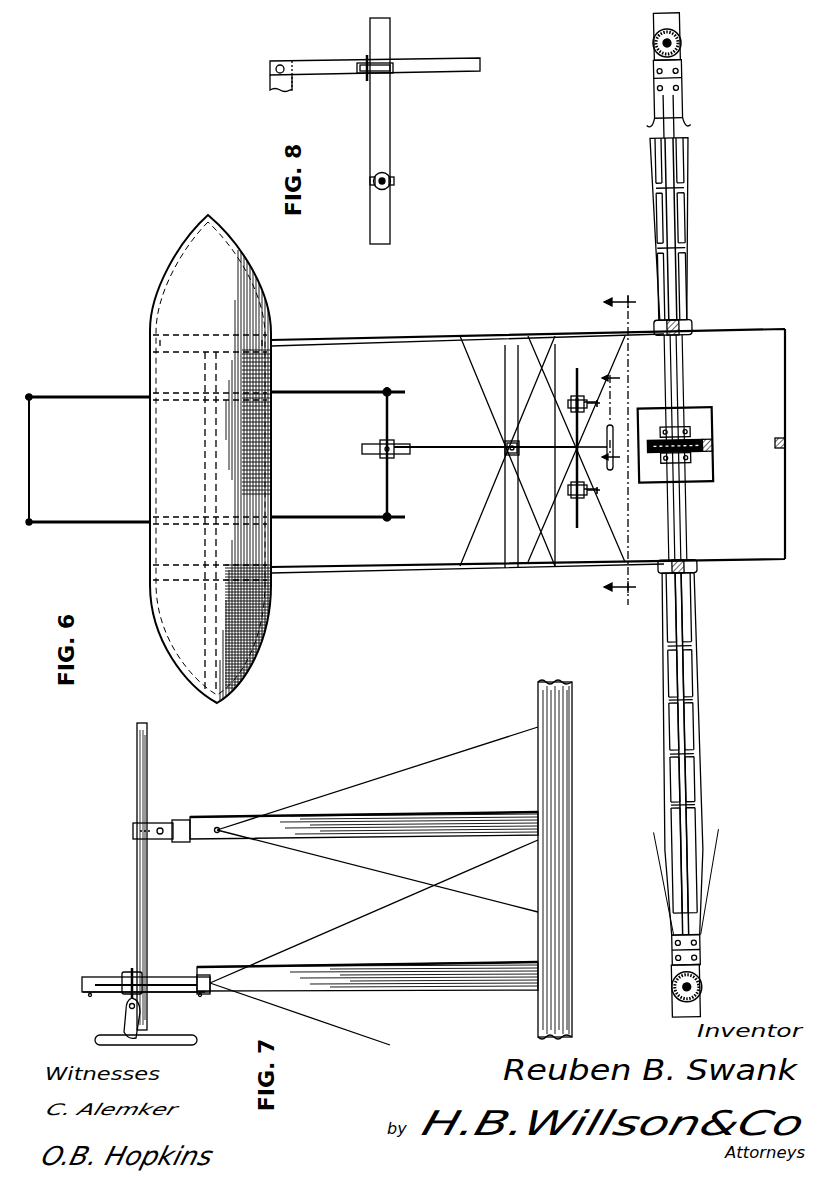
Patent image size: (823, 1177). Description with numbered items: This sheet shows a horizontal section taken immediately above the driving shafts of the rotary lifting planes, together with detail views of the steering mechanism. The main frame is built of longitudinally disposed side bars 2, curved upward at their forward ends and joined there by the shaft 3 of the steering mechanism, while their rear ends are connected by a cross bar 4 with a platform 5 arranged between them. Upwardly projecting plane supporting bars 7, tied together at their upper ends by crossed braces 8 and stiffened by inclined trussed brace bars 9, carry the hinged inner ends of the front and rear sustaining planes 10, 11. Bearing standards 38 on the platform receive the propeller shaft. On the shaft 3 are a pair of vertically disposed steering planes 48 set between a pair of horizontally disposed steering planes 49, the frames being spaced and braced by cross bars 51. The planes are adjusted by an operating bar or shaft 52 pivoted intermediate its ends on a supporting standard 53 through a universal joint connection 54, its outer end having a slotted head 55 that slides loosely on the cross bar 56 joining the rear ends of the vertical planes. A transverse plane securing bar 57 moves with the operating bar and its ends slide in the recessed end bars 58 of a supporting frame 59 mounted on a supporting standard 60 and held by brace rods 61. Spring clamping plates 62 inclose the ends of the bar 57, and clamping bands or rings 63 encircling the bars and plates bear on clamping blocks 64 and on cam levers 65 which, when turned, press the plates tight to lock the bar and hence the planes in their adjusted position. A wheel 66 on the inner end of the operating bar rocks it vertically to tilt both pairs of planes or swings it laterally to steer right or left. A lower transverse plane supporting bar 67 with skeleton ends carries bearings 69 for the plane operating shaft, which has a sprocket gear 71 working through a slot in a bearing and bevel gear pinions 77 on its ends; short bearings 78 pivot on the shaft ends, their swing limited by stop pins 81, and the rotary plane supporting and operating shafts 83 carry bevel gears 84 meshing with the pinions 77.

In FIG. 6, the side bars 2 is at (406, 340).
In FIG. 7, the side bars 2 is at (572, 852).
In FIG. 6, the shaft 3 is at (207, 480).
In FIG. 6, the cross bar 4 is at (508, 540).
In FIG. 6, the platform 5 is at (738, 444).
In FIG. 6, the plane supporting bars 7 is at (698, 326).
In FIG. 6, the crossed braces 8 is at (604, 414).
In FIG. 6, the trussed brace bars 9 is at (622, 444).
In FIG. 6, the front sustaining plane 10 is at (679, 138).
In FIG. 6, the rear sustaining plane 11 is at (718, 449).
In FIG. 6, the bearing standards 38 is at (780, 436).
In FIG. 6, the vertically disposed steering planes 48 is at (96, 396).
In FIG. 6, the horizontally disposed steering planes 49 is at (258, 600).
In FIG. 6, the cross bars 51 is at (192, 350).
In FIG. 6, the operating bar or shaft 52 is at (480, 446).
In FIG. 7, the operating bar or shaft 52 is at (138, 880).
In FIG. 8, the operating bar or shaft 52 is at (392, 180).
In FIG. 6, the supporting standard 53 is at (503, 446).
In FIG. 7, the supporting standard 53 is at (290, 812).
In FIG. 6, the universal joint connection 54 is at (508, 457).
In FIG. 7, the universal joint connection 54 is at (140, 824).
In FIG. 6, the slotted head 55 is at (378, 452).
In FIG. 6, the cross bar 56 is at (384, 432).
In FIG. 6, the plane securing bar 57 is at (577, 368).
In FIG. 7, the plane securing bar 57 is at (160, 975).
In FIG. 8, the plane securing bar 57 is at (372, 170).
In FIG. 7, the recessed end bars 58 is at (90, 983).
In FIG. 6, the supporting frame 59 is at (566, 468).
In FIG. 7, the supporting frame 59 is at (100, 975).
In FIG. 7, the supporting standard 60 is at (430, 964).
In FIG. 6, the brace rods 61 is at (610, 352).
In FIG. 7, the brace rods 61 is at (278, 955).
In FIG. 7, the spring clamping plates 62 is at (200, 995).
In FIG. 8, the spring clamping plates 62 is at (470, 72).
In FIG. 6, the clamping bands or rings 63 is at (568, 404).
In FIG. 7, the clamping bands or rings 63 is at (132, 968).
In FIG. 8, the clamping bands or rings 63 is at (366, 56).
In FIG. 6, the clamping blocks 64 is at (570, 409).
In FIG. 7, the clamping blocks 64 is at (130, 972).
In FIG. 6, the cam levers 65 is at (603, 406).
In FIG. 7, the cam levers 65 is at (125, 1013).
In FIG. 8, the cam levers 65 is at (395, 73).
In FIG. 6, the wheel 66 is at (613, 468).
In FIG. 7, the wheel 66 is at (170, 1045).
In FIG. 6, the plane supporting bar 67 is at (652, 163).
In FIG. 6, the bearings 69 is at (659, 90).
In FIG. 6, the sprocket gear 71 is at (721, 459).
In FIG. 6, the bevel gear pinions 77 is at (684, 66).
In FIG. 6, the short bearings 78 is at (674, 950).
In FIG. 6, the stop pins 81 is at (657, 68).
In FIG. 6, the rotary plane supporting and operating shafts 83 is at (683, 38).
In FIG. 6, the bevel gears 84 is at (703, 20).